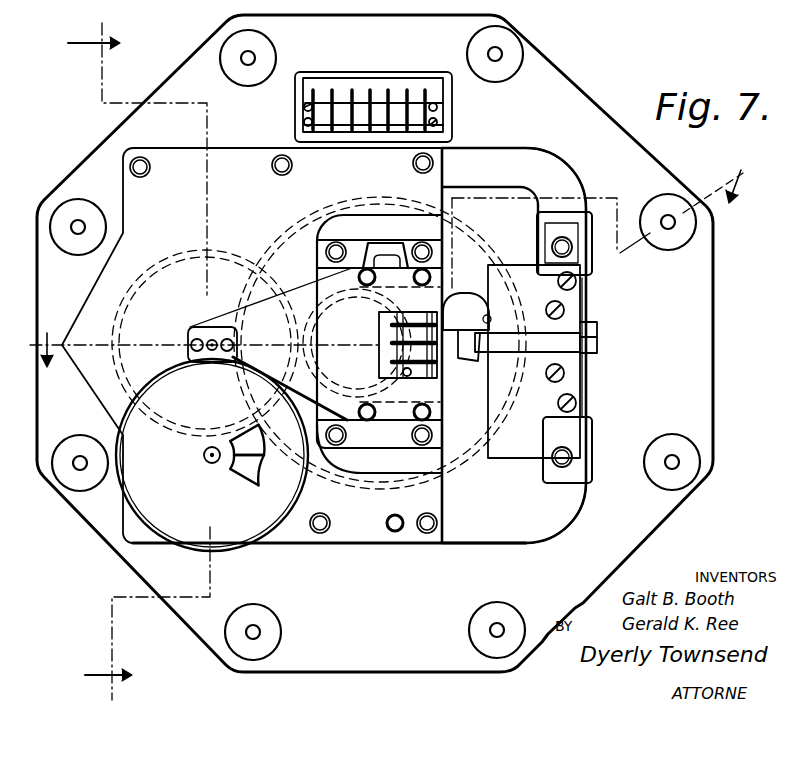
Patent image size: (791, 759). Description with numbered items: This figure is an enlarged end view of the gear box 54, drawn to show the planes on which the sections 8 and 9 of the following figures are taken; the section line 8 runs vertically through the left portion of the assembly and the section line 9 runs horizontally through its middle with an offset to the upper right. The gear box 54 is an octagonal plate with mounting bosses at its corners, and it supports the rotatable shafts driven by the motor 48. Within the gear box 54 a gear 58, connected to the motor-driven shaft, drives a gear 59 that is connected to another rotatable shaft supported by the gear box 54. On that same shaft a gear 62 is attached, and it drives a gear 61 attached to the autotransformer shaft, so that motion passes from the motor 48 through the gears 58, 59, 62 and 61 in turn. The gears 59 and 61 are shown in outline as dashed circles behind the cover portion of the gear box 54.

The section line 8- 8 is at (139, 360).
The section line 9- 9 is at (397, 268).
The motor 48 is at (152, 495).
The gear box 54 is at (437, 543).
The gear 58 is at (188, 470).
The gear 59 is at (170, 254).
The gear 61 is at (331, 205).
The gear 62 is at (209, 326).